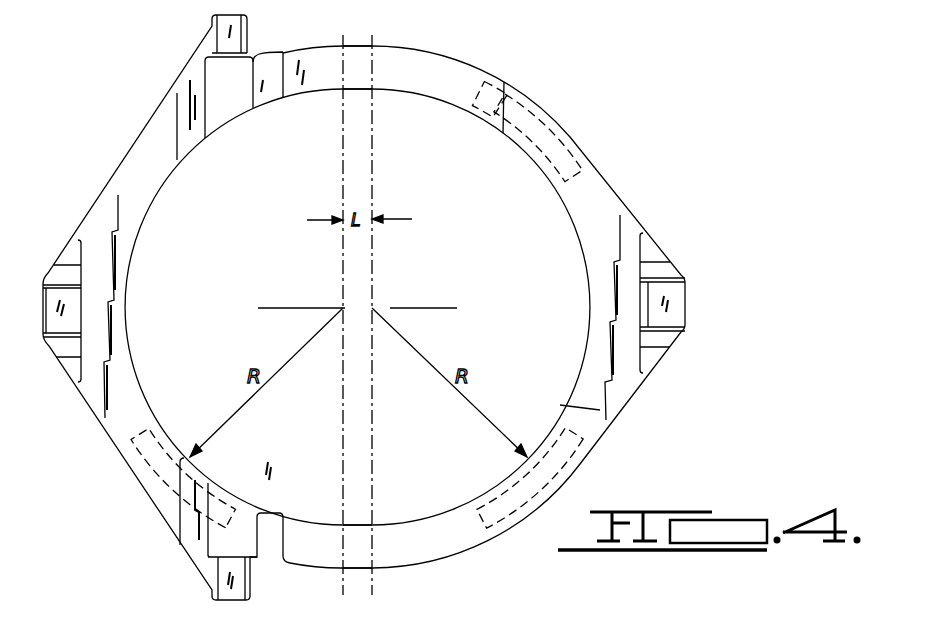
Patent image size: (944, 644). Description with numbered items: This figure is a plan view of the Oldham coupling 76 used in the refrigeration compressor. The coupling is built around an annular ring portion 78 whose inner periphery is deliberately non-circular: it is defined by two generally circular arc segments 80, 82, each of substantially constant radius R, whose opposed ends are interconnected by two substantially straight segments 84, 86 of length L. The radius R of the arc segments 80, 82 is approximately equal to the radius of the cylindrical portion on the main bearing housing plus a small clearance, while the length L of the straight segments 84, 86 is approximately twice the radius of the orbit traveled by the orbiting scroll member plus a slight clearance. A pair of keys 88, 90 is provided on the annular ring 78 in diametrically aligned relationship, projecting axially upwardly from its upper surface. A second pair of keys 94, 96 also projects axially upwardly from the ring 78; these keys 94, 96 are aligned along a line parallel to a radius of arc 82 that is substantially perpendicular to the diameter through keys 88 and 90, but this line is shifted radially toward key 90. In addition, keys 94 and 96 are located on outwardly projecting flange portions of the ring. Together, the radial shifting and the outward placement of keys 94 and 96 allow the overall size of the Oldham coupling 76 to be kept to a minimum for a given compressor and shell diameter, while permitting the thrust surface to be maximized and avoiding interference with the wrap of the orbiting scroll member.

The Oldham coupling 76 is at (616, 122).
The annular ring portion 78 is at (460, 76).
The circular arc segment 80 is at (557, 400).
The circular arc segment 82 is at (156, 403).
The straight segment 84 is at (352, 60).
The straight segment 86 is at (363, 550).
The key 88 is at (673, 303).
The key 90 is at (72, 308).
The key 94 is at (224, 587).
The key 96 is at (220, 34).